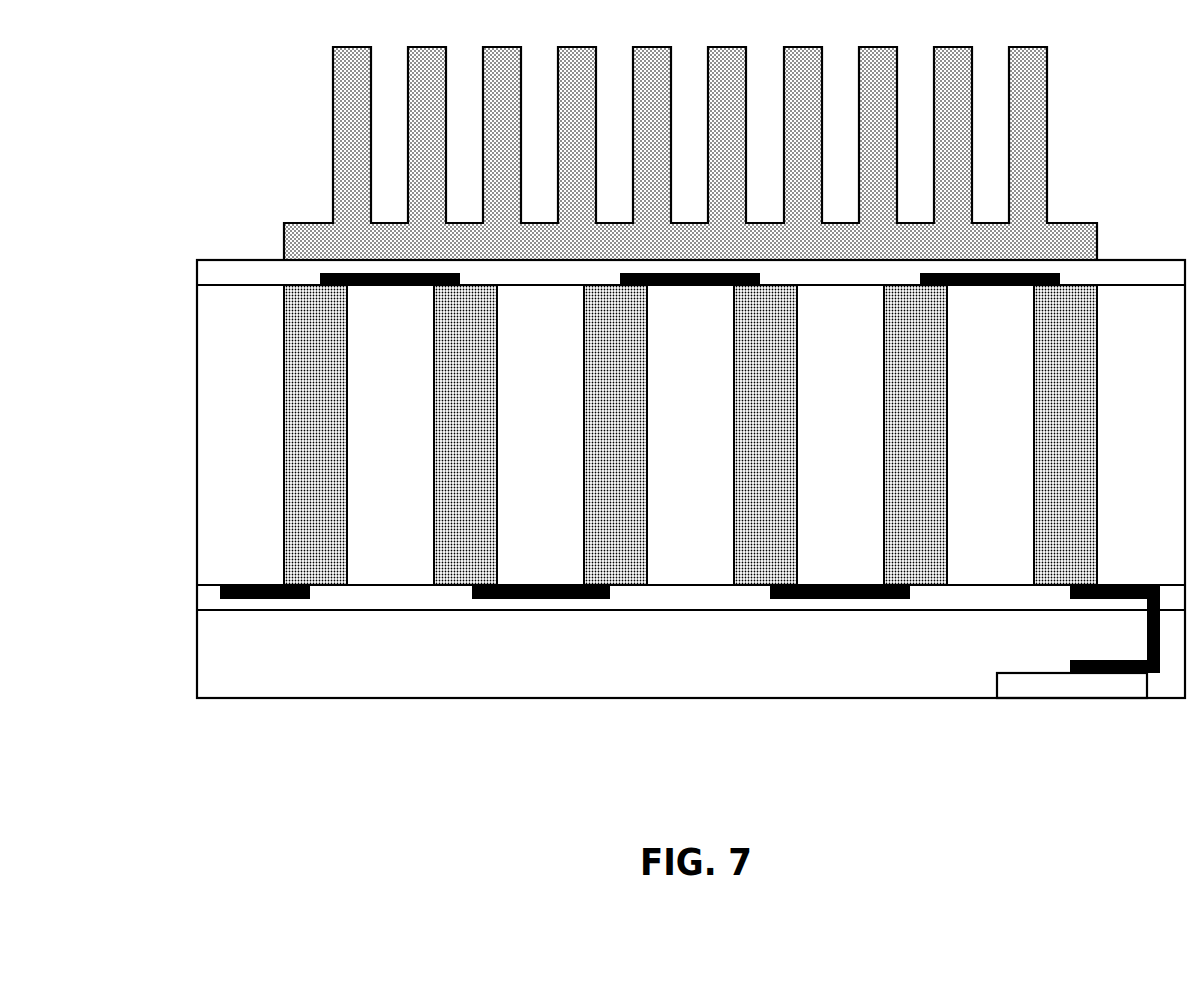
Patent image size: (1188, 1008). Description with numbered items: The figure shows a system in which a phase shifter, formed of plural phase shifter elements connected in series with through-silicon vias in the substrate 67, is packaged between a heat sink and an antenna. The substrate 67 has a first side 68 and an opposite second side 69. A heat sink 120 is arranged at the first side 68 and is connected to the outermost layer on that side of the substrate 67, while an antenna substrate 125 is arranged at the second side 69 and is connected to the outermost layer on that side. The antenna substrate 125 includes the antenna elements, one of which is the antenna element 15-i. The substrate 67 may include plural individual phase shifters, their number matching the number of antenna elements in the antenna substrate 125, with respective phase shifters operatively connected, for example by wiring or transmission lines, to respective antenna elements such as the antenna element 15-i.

The substrate 67 is at (197, 422).
The first side 68 is at (220, 285).
The second side 69 is at (383, 587).
The heat sink 120 is at (297, 222).
The antenna substrate 125 is at (483, 698).
The antenna element 15-i is at (1060, 685).